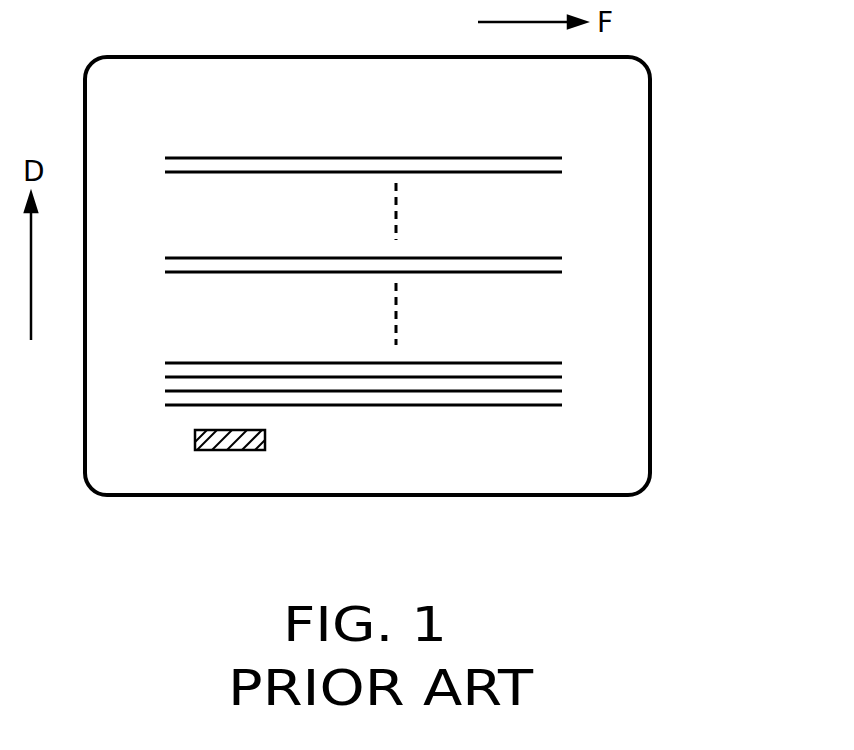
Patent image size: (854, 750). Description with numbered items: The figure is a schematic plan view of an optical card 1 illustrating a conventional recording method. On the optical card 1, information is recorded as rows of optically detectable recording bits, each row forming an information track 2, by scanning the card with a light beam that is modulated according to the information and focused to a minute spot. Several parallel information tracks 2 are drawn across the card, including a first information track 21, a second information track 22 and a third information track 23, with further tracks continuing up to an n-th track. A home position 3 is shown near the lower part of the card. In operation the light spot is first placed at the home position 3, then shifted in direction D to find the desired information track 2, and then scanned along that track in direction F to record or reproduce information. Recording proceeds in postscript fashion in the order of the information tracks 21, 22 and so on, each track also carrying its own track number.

The optical card 1 is at (652, 112).
The information track 2 is at (349, 291).
The home position 3 is at (267, 437).
The first information track 21 is at (337, 410).
The second information track 22 is at (337, 382).
The third information track 23 is at (337, 353).